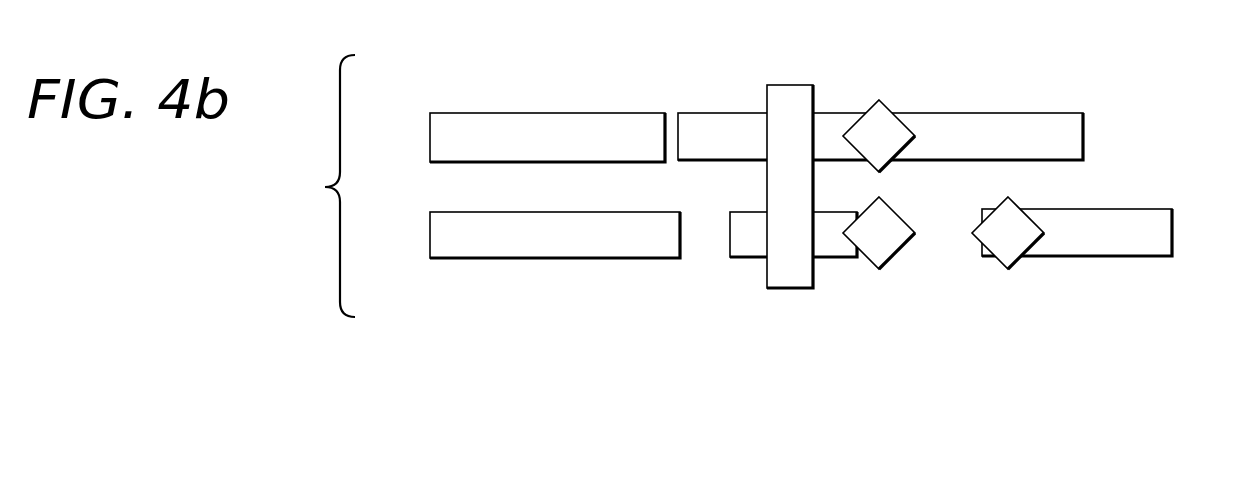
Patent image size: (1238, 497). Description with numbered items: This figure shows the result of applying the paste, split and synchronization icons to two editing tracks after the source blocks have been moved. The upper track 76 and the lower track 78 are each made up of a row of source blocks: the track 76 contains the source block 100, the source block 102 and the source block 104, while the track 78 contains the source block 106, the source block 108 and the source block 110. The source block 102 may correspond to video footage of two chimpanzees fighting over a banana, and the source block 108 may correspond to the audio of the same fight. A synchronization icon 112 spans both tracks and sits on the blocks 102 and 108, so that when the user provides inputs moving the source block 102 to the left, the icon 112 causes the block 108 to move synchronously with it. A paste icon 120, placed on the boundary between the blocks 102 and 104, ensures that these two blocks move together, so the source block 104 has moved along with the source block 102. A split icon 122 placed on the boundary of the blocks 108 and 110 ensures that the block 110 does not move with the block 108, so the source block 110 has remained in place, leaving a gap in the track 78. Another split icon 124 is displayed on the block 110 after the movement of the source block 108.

The track 76 is at (430, 128).
The track 78 is at (430, 226).
The source block 100 is at (545, 113).
The source block 102 is at (710, 113).
The source block 104 is at (978, 113).
The source block 106 is at (545, 258).
The source block 108 is at (836, 257).
The source block 110 is at (1108, 257).
The synchronization icon 112 is at (790, 85).
The paste icon 120 is at (886, 107).
The split icon 122 is at (893, 263).
The split icon 124 is at (1012, 265).